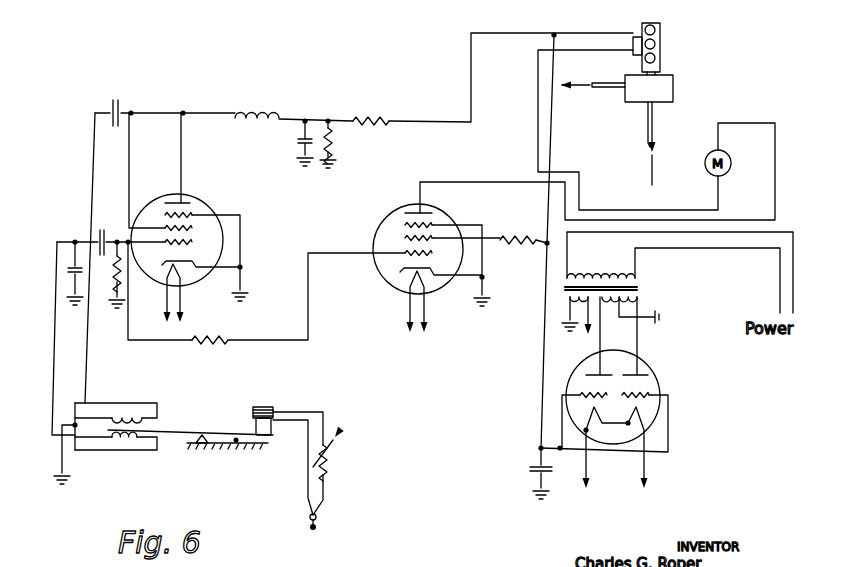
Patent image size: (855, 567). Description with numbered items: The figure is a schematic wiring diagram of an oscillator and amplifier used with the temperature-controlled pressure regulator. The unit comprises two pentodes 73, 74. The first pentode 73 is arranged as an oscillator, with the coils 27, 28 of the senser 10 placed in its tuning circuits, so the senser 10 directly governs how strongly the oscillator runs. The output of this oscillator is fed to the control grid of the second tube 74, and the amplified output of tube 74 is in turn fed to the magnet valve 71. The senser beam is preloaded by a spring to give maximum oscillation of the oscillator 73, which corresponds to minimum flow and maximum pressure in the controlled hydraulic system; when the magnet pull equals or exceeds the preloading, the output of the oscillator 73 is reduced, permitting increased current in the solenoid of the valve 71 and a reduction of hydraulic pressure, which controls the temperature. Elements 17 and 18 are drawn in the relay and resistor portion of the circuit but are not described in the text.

The magnet valve 71 is at (640, 31).
The pentode 73 is at (211, 203).
The pentode 74 is at (448, 210).
The coil 27 is at (135, 407).
The coil 28 is at (137, 446).
The senser 10 is at (199, 418).
The contact terminal 17 is at (273, 407).
The variable resistor 18 is at (318, 516).